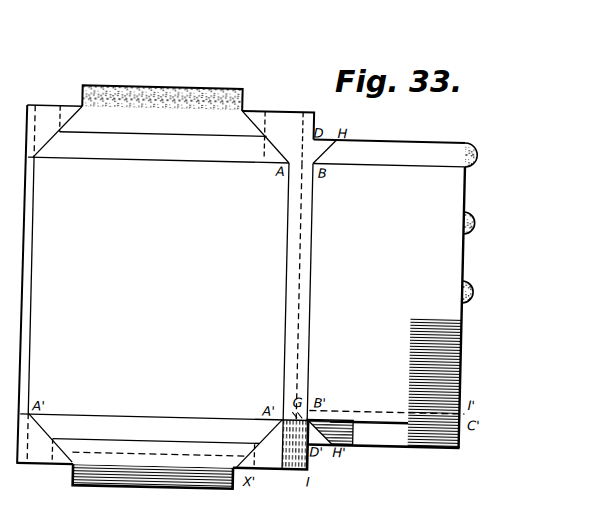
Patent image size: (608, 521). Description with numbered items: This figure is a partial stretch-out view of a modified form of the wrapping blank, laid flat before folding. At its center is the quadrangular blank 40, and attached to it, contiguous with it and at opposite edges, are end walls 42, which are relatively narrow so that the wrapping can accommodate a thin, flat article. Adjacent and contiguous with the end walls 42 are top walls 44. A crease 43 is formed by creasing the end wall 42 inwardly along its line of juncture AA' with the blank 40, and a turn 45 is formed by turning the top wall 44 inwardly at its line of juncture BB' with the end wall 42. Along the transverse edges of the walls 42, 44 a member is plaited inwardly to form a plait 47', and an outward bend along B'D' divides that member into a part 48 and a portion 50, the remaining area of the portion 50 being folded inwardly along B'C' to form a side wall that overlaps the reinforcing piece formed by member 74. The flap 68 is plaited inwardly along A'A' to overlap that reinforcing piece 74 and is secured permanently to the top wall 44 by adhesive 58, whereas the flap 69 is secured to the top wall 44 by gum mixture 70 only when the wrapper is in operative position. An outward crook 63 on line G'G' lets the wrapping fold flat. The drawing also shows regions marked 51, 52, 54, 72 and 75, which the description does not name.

The quadrangular blank 40 is at (216, 289).
The end wall 42 is at (297, 233).
The crease 43 is at (290, 300).
The top wall 44 is at (416, 306).
The turn 45 is at (314, 365).
The plait 47' is at (387, 399).
The part 48 is at (270, 440).
The portion 50 is at (397, 439).
The glued triangular pocket 51 is at (330, 431).
The connecting strip 52 is at (289, 137).
The top strip 54 is at (389, 153).
The adhesive 58 is at (146, 482).
The outward crook 63 is at (303, 293).
The flap 68 is at (143, 440).
The flap 69 is at (150, 133).
The gum mixture 70 is at (201, 89).
The tab 72 is at (473, 162).
The member 74 is at (259, 444).
The triangular fold 75 is at (265, 137).